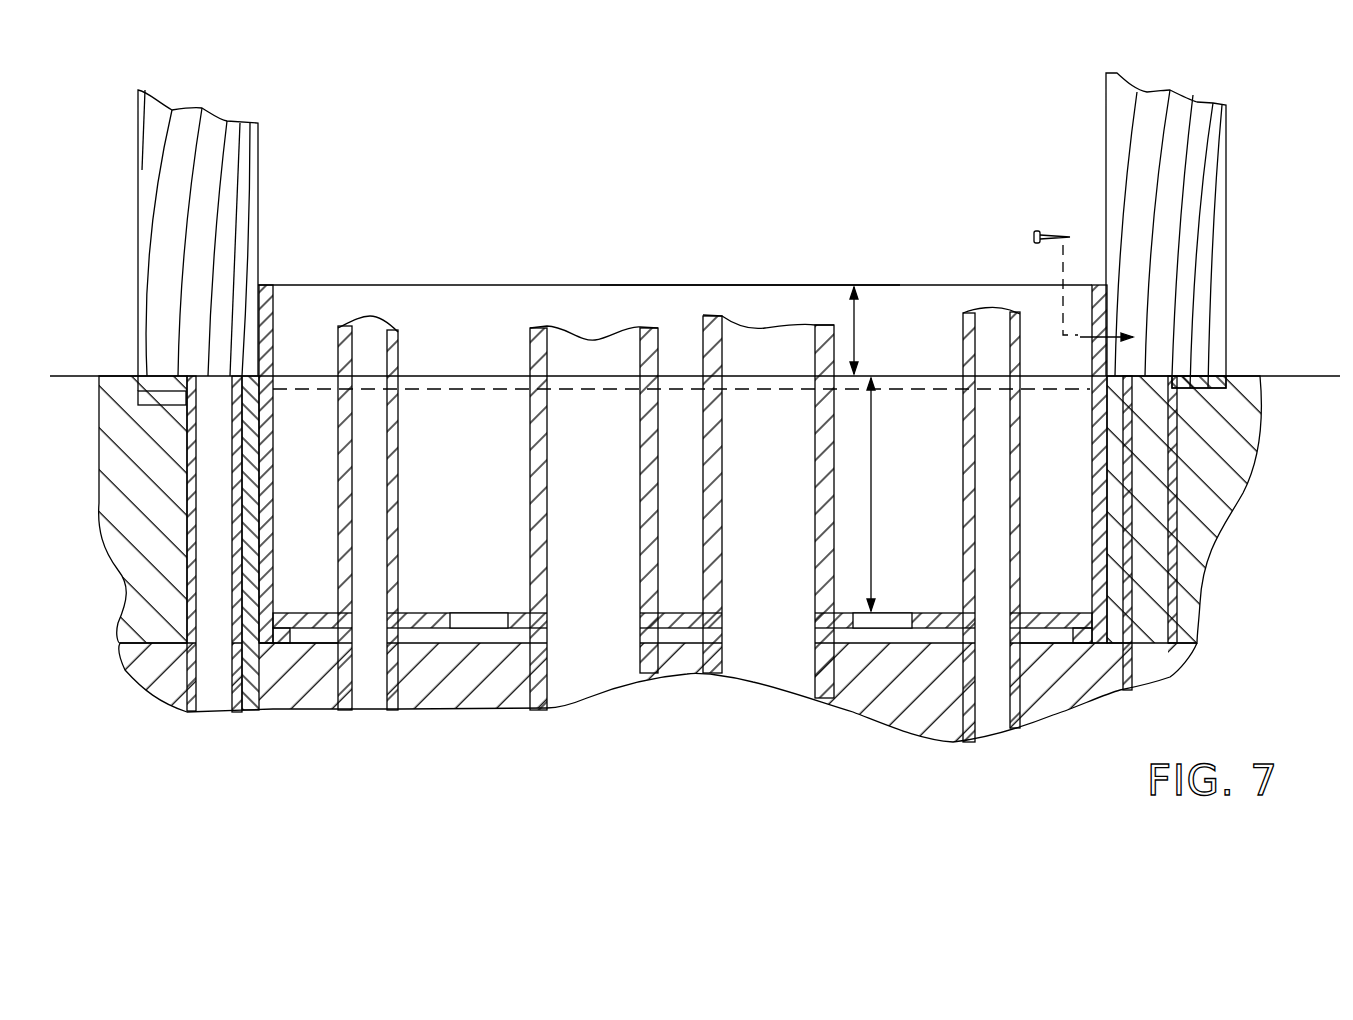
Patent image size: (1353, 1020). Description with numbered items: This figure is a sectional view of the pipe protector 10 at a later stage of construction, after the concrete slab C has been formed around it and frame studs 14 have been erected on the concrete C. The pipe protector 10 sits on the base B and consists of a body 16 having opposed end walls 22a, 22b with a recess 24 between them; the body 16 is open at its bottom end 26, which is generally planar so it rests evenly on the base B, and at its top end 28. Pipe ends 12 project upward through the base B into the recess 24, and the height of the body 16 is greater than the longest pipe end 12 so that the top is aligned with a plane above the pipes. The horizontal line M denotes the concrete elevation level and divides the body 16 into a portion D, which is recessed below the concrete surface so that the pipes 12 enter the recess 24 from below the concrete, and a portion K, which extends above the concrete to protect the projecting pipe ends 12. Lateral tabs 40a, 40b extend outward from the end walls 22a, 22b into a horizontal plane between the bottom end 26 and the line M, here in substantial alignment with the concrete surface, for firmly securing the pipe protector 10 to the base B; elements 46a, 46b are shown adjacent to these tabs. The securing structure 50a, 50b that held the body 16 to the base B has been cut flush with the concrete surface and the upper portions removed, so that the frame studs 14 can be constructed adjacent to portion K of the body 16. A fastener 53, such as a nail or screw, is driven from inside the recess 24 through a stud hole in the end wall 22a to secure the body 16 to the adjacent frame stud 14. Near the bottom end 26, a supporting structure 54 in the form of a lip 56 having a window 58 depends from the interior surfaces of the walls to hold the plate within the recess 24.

The pipe protector 10 is at (678, 262).
The pipe ends 12 is at (592, 635).
The frame studs 14 is at (232, 168).
The body 16 is at (925, 284).
The end wall 22a is at (1090, 537).
The end wall 22b is at (266, 290).
The recess 24 is at (305, 466).
The bottom end 26 is at (273, 643).
The top end 28 is at (947, 302).
The lateral tab 40a is at (1187, 372).
The lateral tab 40b is at (142, 397).
The lip 46a is at (1172, 400).
The lip 46b is at (190, 410).
The securing structure 50a is at (1143, 655).
The securing structure 50b is at (212, 693).
The fastener 53 is at (1054, 233).
The supporting structure 54 is at (1060, 643).
The lip 56 is at (278, 648).
The window 58 is at (307, 633).
The portion K is at (858, 336).
The portion D is at (870, 494).
The concrete elevation level M is at (1283, 378).
The base B is at (313, 678).
The concrete slab C is at (1202, 450).